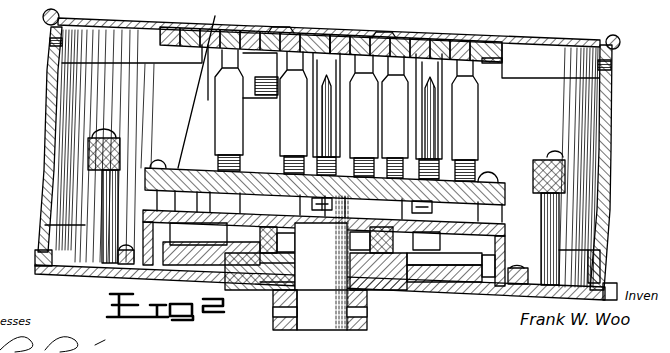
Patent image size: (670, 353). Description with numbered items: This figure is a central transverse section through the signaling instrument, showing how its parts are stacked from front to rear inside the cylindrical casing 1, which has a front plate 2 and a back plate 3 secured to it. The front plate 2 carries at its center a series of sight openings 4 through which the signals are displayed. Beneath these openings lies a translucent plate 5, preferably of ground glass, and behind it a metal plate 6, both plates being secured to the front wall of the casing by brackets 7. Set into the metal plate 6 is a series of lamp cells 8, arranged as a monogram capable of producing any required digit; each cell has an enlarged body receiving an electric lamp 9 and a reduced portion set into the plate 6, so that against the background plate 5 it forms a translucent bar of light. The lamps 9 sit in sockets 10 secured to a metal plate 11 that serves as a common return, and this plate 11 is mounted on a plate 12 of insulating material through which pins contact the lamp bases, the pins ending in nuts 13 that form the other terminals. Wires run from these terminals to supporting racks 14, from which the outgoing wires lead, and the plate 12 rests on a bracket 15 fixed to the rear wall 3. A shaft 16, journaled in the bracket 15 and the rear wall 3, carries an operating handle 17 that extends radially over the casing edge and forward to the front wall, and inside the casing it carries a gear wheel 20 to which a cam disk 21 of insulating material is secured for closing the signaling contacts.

The cylindrical casing 1 is at (604, 146).
The front plate 2 is at (568, 43).
The back plate 3 is at (74, 280).
The sight openings 4 is at (307, 33).
The plate 5 is at (201, 85).
The plate 6 is at (448, 40).
The brackets 7 is at (504, 62).
The lamp cells 8 is at (214, 93).
The electric lamp 9 is at (440, 140).
The sockets 10 is at (474, 172).
The metal plate 11 is at (185, 166).
The plate of insulating material 12 is at (156, 168).
The nuts 13 is at (349, 212).
The supporting racks 14 is at (88, 152).
The bracket 15 is at (498, 237).
The shaft 16 is at (321, 262).
The operating handle 17 is at (372, 322).
The gear wheel 20 is at (324, 256).
The cam disk 21 is at (403, 256).